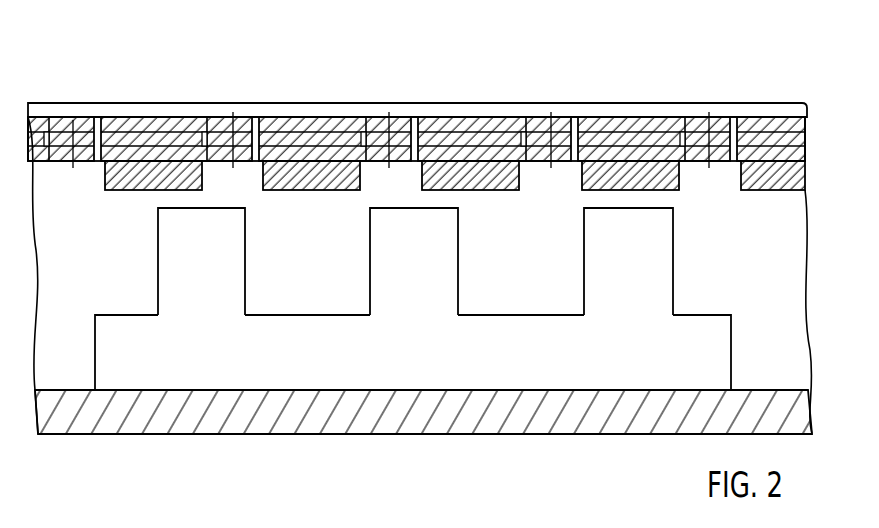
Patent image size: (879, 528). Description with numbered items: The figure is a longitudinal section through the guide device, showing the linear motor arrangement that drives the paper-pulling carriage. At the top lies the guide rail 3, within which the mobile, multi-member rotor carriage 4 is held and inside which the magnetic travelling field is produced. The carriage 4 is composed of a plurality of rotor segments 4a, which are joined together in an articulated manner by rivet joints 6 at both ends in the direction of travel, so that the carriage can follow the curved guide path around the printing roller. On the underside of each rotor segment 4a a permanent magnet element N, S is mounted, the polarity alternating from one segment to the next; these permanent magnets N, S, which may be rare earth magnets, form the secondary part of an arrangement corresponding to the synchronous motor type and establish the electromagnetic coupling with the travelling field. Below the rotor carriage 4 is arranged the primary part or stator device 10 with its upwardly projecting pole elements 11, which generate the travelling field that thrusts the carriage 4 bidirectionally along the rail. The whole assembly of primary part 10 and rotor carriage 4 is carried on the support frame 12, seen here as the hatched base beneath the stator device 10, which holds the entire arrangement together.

The guide rail 3 is at (447, 110).
The rotor carriage 4 is at (90, 92).
The rotor segment 4a is at (330, 126).
The rivet joint 6 is at (233, 116).
The permanent magnet element (north pole) N is at (135, 165).
The permanent magnet element (south pole) S is at (308, 165).
The stator device 10 is at (719, 352).
The pole element 11 is at (447, 267).
The support frame 12 is at (368, 427).